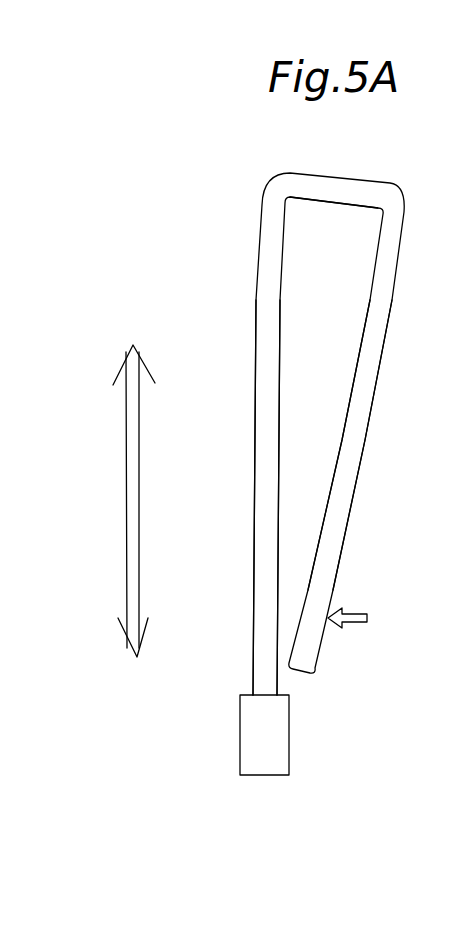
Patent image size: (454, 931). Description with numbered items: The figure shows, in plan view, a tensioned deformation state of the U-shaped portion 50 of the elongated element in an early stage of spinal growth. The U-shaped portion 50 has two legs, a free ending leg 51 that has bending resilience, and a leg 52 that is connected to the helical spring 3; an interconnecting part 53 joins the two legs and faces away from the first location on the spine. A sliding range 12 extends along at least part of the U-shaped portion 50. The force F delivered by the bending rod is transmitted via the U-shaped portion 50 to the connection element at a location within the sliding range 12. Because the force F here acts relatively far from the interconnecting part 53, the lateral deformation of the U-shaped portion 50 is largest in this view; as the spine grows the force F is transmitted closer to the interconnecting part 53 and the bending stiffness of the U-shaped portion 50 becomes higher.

The U-shaped portion 50 is at (229, 200).
The free ending leg 51 is at (380, 322).
The leg 52 is at (270, 310).
The interconnecting part 53 is at (332, 190).
The helical spring 3 is at (278, 750).
The sliding range 12 is at (126, 474).
The force F is at (354, 612).